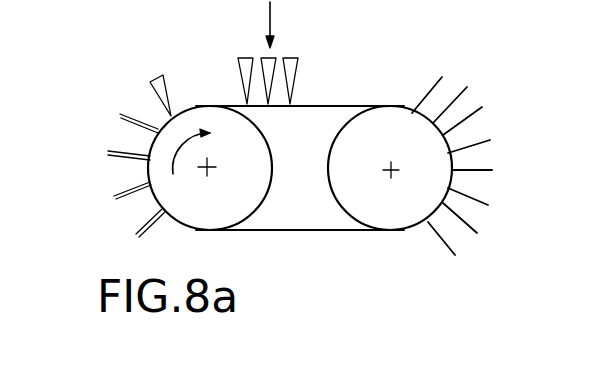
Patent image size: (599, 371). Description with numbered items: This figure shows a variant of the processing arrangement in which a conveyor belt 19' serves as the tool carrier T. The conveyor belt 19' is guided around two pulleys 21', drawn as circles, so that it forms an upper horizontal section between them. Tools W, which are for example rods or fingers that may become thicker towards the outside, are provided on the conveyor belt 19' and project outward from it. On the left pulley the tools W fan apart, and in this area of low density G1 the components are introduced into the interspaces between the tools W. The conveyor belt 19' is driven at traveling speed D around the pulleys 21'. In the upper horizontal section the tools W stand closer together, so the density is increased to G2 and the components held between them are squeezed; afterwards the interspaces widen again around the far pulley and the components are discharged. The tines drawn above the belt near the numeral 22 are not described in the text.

The conveyor belt 19' is at (300, 194).
The pulleys 21' is at (238, 168).
The bristles / tines 22 is at (243, 69).
The traveling speed D is at (191, 156).
The low density G1 is at (117, 173).
The increased density G2 is at (285, 24).
The tools W is at (491, 139).
The tool carrier T is at (278, 229).